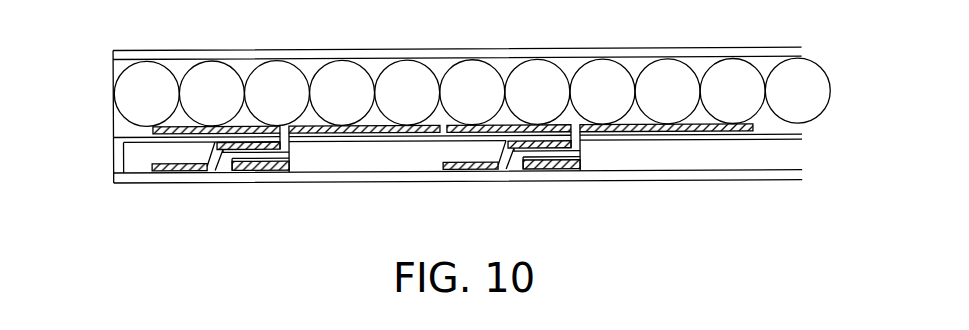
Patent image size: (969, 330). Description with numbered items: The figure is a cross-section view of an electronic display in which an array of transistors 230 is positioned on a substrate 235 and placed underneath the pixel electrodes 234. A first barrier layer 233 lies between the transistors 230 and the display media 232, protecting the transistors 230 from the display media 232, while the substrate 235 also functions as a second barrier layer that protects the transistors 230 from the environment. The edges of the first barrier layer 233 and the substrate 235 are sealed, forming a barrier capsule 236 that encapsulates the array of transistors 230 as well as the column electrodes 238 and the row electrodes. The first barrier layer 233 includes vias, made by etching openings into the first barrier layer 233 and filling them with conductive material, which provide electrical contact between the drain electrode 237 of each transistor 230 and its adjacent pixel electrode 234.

The transistor 230 is at (297, 162).
The display media 232 is at (819, 93).
The first barrier layer 233 is at (790, 135).
The pixel electrode 234 is at (757, 126).
The substrate 235 is at (718, 177).
The barrier capsule 236 is at (92, 138).
The drain electrode 237 is at (290, 143).
The column electrode 238 is at (193, 168).